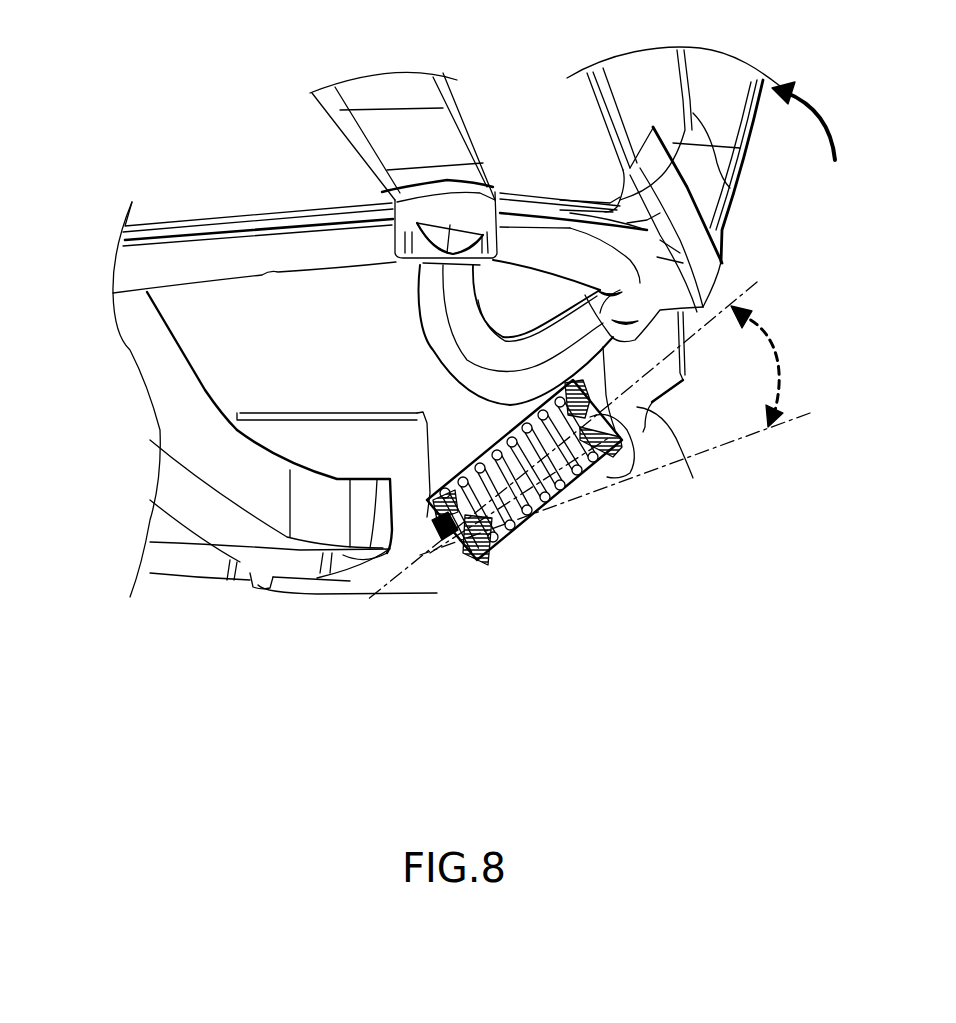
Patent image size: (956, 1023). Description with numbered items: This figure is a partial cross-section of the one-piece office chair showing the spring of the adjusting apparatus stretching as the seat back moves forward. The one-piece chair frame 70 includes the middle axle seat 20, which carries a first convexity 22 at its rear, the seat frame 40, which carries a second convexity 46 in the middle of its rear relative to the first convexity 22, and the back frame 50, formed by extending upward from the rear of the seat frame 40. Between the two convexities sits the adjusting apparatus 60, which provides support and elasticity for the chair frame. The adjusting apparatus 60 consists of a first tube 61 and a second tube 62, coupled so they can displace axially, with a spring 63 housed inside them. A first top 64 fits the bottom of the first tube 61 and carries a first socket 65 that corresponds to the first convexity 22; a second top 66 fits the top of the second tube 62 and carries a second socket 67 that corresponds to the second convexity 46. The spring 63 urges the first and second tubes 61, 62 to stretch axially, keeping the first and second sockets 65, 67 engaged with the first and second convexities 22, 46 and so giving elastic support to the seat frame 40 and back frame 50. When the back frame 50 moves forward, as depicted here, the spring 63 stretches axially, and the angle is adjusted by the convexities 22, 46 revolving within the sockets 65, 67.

The one-piece chair frame 70 is at (134, 78).
The seat frame 40 is at (233, 222).
The back frame 50 is at (633, 108).
The middle axle seat 20 is at (313, 442).
The first convexity 22 is at (452, 535).
The second convexity 46 is at (693, 462).
The adjusting apparatus 60 is at (772, 497).
The first tube 61 is at (525, 538).
The second tube 62 is at (603, 470).
The spring 63 is at (547, 503).
The first top 64 is at (530, 510).
The first socket 65 is at (462, 545).
The second top 66 is at (593, 445).
The second socket 67 is at (615, 420).